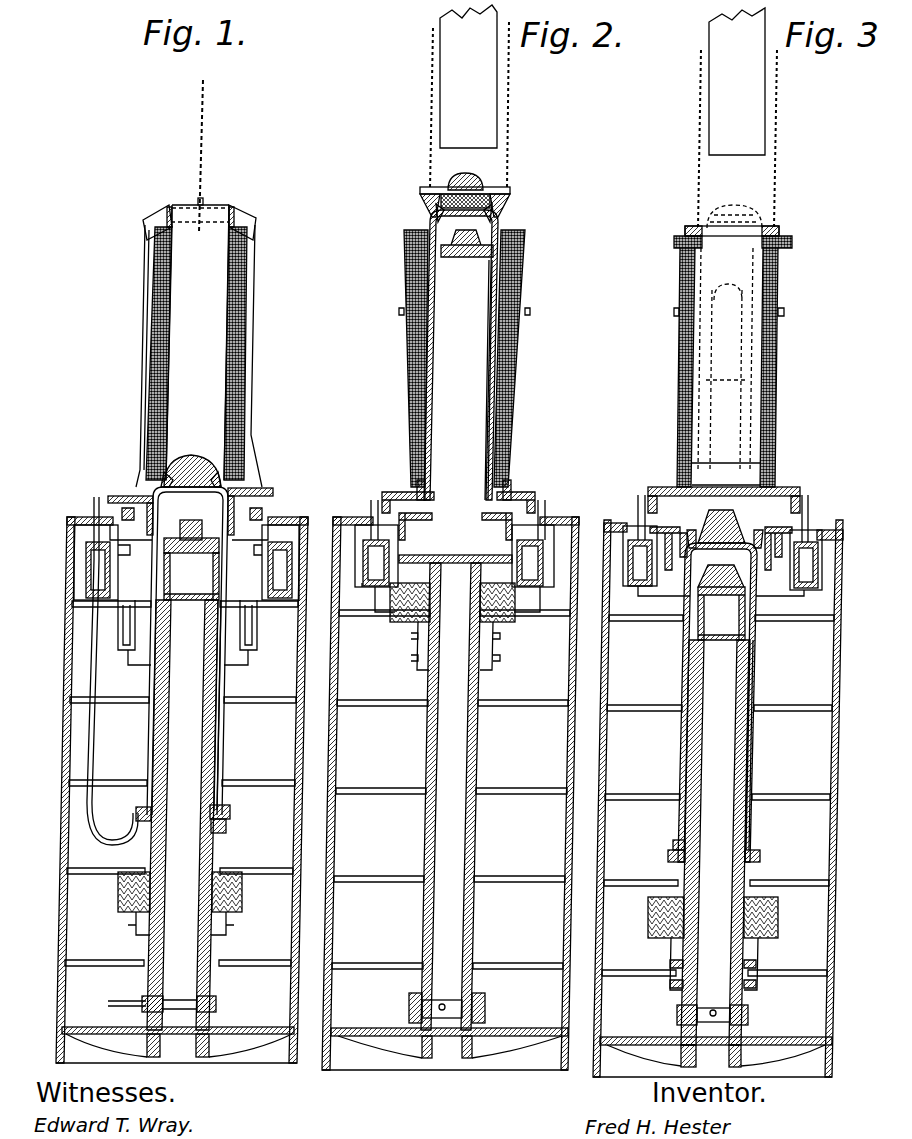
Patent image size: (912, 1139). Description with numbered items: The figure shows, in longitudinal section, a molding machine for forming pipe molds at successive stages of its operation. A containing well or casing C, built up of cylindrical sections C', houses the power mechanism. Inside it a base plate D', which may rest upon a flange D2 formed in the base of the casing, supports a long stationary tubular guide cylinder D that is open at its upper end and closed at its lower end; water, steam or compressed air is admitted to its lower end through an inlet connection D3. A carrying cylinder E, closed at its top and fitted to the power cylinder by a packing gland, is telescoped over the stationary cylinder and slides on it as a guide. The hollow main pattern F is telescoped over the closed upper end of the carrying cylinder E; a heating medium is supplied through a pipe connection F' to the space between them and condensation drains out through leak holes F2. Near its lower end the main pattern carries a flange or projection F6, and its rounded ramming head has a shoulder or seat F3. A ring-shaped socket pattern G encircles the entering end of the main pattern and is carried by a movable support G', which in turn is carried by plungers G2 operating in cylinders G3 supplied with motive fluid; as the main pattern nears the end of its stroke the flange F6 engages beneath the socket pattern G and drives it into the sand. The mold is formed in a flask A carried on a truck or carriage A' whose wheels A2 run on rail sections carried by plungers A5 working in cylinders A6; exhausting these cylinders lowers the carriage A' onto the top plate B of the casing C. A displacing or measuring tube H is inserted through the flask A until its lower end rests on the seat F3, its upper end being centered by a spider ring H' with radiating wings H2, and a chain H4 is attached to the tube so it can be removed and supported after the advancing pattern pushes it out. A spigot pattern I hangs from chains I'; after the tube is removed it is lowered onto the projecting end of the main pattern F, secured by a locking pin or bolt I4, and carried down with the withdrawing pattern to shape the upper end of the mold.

In FIG. 1, the flask A is at (172, 356).
In FIG. 2, the flask A is at (479, 358).
In FIG. 3, the flask A is at (753, 361).
In FIG. 1, the truck or carriage A' is at (212, 473).
In FIG. 2, the truck or carriage A' is at (481, 468).
In FIG. 3, the truck or carriage A' is at (739, 472).
In FIG. 1, the wheels A2 is at (186, 562).
In FIG. 2, the wheels A2 is at (375, 502).
In FIG. 3, the wheels A2 is at (641, 498).
In FIG. 2, the plungers A5 is at (494, 560).
In FIG. 3, the plungers A5 is at (660, 600).
In FIG. 2, the cylinders A6 is at (372, 594).
In FIG. 3, the cylinders A6 is at (637, 600).
In FIG. 1, the top plate B is at (282, 518).
In FIG. 2, the top plate B is at (564, 518).
In FIG. 3, the top plate B is at (828, 528).
In FIG. 1, the containing well or casing C is at (174, 790).
In FIG. 2, the containing well or casing C is at (450, 808).
In FIG. 3, the containing well or casing C is at (728, 798).
In FIG. 1, the cylindrical sections C' is at (200, 791).
In FIG. 2, the cylindrical sections C' is at (468, 805).
In FIG. 3, the cylindrical sections C' is at (718, 795).
In FIG. 1, the stationary tubular guide cylinder D is at (198, 815).
In FIG. 2, the stationary tubular guide cylinder D is at (470, 796).
In FIG. 3, the stationary tubular guide cylinder D is at (736, 842).
In FIG. 1, the base plate D' is at (178, 1020).
In FIG. 2, the base plate D' is at (449, 1074).
In FIG. 3, the base plate D' is at (716, 1037).
In FIG. 1, the flange D2 is at (275, 1040).
In FIG. 2, the flange D2 is at (338, 1040).
In FIG. 3, the flange D2 is at (614, 1045).
In FIG. 1, the inlet connection D3 is at (118, 1003).
In FIG. 2, the inlet connection D3 is at (446, 1004).
In FIG. 3, the inlet connection D3 is at (713, 1006).
In FIG. 1, the carrying cylinder E is at (221, 730).
In FIG. 2, the carrying cylinder E is at (492, 334).
In FIG. 3, the carrying cylinder E is at (752, 769).
In FIG. 1, the main pattern F is at (207, 651).
In FIG. 2, the main pattern F is at (439, 355).
In FIG. 3, the main pattern F is at (697, 702).
In FIG. 1, the pipe connection F' is at (118, 650).
In FIG. 2, the pipe connection F' is at (494, 223).
In FIG. 1, the leak holes F2 is at (222, 834).
In FIG. 1, the shoulder or seat F3 is at (166, 481).
In FIG. 2, the shoulder or seat F3 is at (438, 196).
In FIG. 3, the shoulder or seat F3 is at (698, 506).
In FIG. 1, the flange or projection F6 is at (144, 808).
In FIG. 2, the flange or projection F6 is at (426, 492).
In FIG. 3, the flange or projection F6 is at (680, 827).
In FIG. 1, the socket pattern ring G is at (223, 460).
In FIG. 3, the socket pattern ring G is at (722, 539).
In FIG. 1, the movable support G' is at (220, 486).
In FIG. 2, the movable support G' is at (455, 528).
In FIG. 3, the movable support G' is at (683, 513).
In FIG. 1, the plungers G2 is at (252, 574).
In FIG. 2, the plungers G2 is at (500, 490).
In FIG. 3, the plungers G2 is at (721, 602).
In FIG. 1, the cylinders G3 is at (240, 640).
In FIG. 1, the displacing or measuring tube H is at (166, 342).
In FIG. 2, the displacing or measuring tube H is at (444, 76).
In FIG. 3, the displacing or measuring tube H is at (710, 81).
In FIG. 1, the spider ring H' is at (168, 183).
In FIG. 1, the radiating wings or flanges H2 is at (151, 222).
In FIG. 1, the chain H4 is at (205, 108).
In FIG. 2, the spigot pattern I is at (486, 195).
In FIG. 3, the spigot pattern I is at (747, 214).
In FIG. 2, the chains I' is at (470, 105).
In FIG. 3, the chains I' is at (737, 139).
In FIG. 1, the locking pin or bolt I4 is at (186, 465).
In FIG. 2, the locking pin or bolt I4 is at (505, 187).